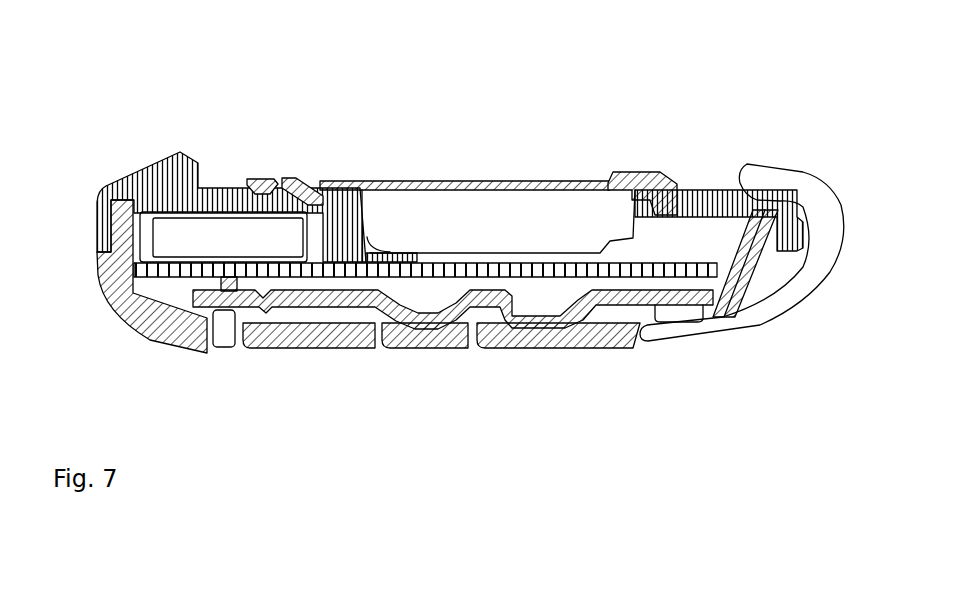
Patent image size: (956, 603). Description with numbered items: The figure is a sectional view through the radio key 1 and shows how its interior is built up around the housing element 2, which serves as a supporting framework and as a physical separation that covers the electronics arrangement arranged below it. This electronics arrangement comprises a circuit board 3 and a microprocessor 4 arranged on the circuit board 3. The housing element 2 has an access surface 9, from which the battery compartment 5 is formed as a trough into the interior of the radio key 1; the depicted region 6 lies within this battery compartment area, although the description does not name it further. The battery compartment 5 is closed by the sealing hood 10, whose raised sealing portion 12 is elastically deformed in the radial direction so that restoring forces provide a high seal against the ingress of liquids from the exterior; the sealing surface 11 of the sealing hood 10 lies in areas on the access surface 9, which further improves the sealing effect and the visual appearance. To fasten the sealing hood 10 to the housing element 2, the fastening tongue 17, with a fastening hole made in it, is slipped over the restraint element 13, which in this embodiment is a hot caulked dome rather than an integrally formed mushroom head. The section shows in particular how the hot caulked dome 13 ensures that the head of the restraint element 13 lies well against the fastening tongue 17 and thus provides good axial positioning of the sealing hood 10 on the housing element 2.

The radio key 1 is at (153, 120).
The housing element 2 is at (683, 190).
The circuit board 3 is at (513, 263).
The microprocessor 4 is at (237, 252).
The battery compartment 5 is at (362, 195).
The cavity 6 is at (443, 222).
The access surface 9 is at (713, 188).
The sealing hood 10 is at (503, 180).
The sealing surface 11 is at (484, 190).
The raised sealing portion 12 is at (277, 193).
The restraint element 13 is at (260, 178).
The fastening tongue 17 is at (222, 190).